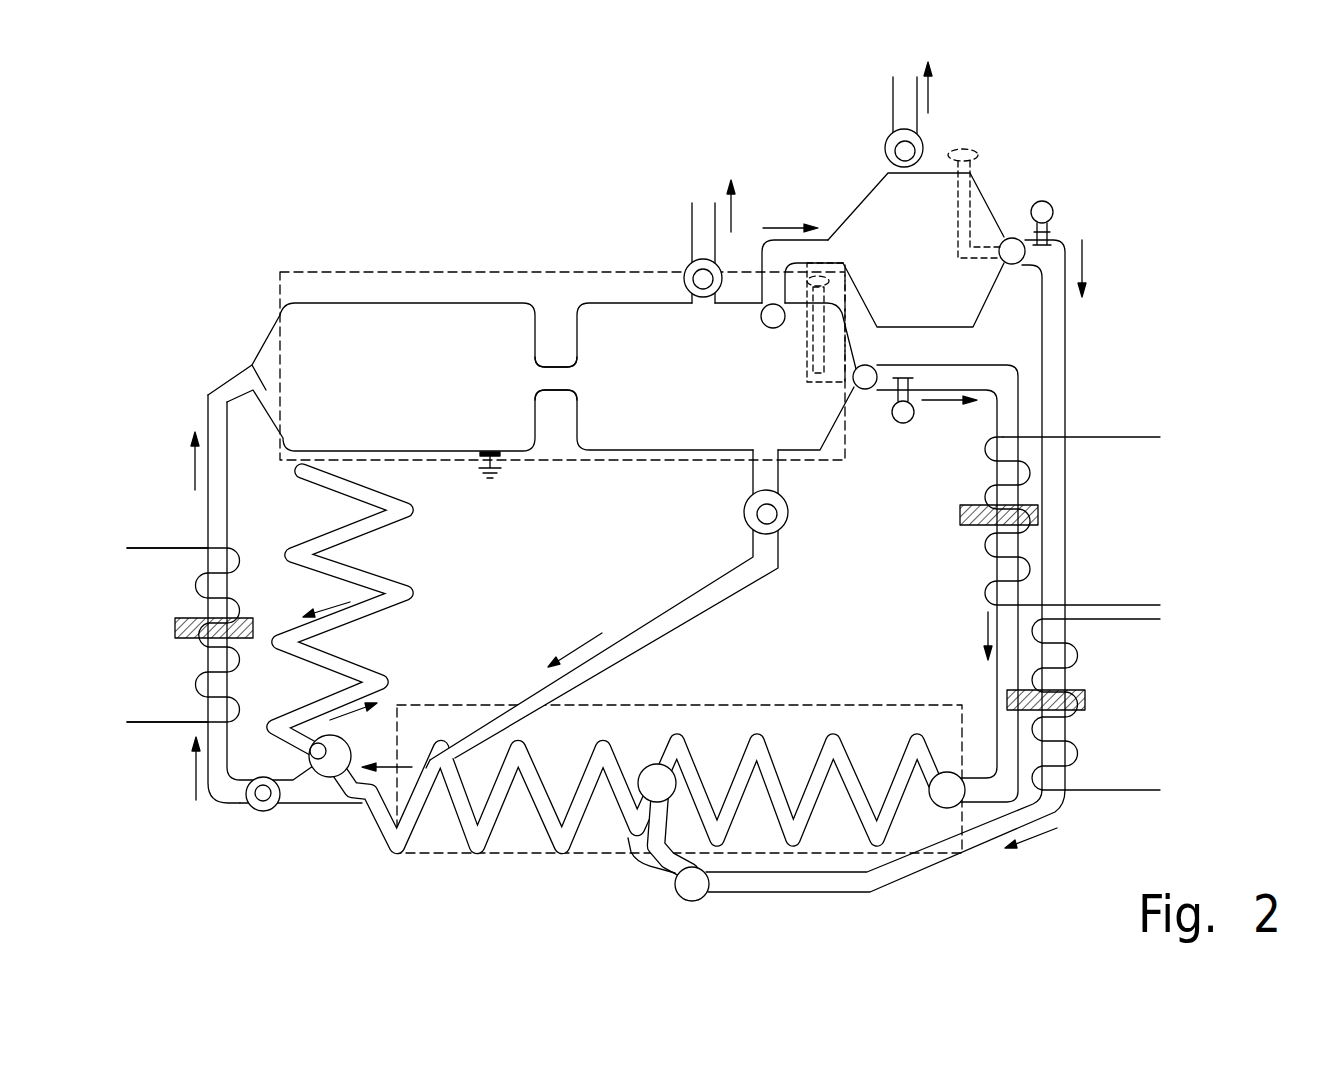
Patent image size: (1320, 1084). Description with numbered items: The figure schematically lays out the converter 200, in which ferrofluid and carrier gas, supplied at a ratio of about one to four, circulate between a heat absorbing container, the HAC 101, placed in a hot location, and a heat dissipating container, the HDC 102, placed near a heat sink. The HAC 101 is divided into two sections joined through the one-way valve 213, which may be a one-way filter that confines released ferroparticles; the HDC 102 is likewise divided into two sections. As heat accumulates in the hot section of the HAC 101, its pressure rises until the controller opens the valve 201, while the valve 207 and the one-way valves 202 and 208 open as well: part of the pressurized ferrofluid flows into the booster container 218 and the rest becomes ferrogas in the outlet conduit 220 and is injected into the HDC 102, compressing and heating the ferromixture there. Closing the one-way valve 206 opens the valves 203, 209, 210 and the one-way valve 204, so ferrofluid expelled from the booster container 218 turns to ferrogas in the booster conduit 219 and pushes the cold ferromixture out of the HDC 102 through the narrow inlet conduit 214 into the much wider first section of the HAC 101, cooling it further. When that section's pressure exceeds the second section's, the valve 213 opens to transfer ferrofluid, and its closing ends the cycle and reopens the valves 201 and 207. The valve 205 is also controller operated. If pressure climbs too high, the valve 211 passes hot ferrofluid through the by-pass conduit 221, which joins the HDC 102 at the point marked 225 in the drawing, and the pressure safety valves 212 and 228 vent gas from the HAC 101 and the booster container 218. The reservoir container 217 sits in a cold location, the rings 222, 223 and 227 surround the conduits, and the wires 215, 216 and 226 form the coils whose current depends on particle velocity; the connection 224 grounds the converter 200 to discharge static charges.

The converter 200 is at (337, 230).
The HAC 101 is at (467, 270).
The HDC 102 is at (838, 703).
The valve 201 is at (866, 390).
The valve 202 is at (960, 803).
The valve 203 is at (263, 806).
The valve 204 is at (258, 378).
The valve 205 is at (320, 762).
The valve 206 is at (656, 764).
The valve 207 is at (775, 328).
The valve 208 is at (840, 254).
The valve 209 is at (1000, 254).
The valve 210 is at (722, 890).
The valve 211 is at (780, 517).
The pressure safety valve 212 is at (690, 270).
The valve 213 is at (573, 372).
The inlet conduit 214 is at (215, 402).
The wire 215 is at (1108, 438).
The wire 216 is at (152, 548).
The reservoir container 217 is at (382, 597).
The booster container 218 is at (855, 193).
The booster conduit 219 is at (1057, 329).
The outlet conduit 220 is at (1003, 393).
The by-pass conduit 221 is at (647, 630).
The ring 222 is at (960, 527).
The ring 223 is at (175, 630).
The earth connection 224 is at (498, 462).
The junction 225 is at (437, 757).
The wire 226 is at (1100, 795).
The ring 227 is at (1085, 700).
The pressure safety valve 228 is at (900, 147).